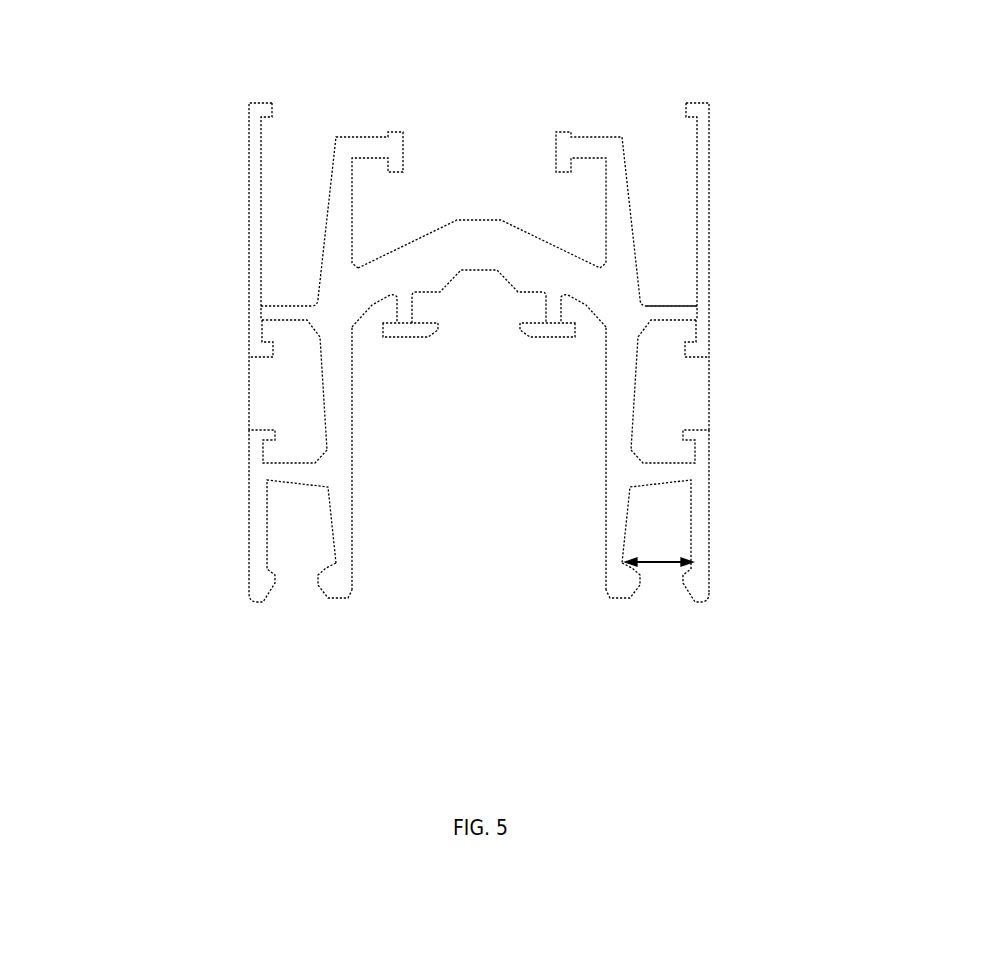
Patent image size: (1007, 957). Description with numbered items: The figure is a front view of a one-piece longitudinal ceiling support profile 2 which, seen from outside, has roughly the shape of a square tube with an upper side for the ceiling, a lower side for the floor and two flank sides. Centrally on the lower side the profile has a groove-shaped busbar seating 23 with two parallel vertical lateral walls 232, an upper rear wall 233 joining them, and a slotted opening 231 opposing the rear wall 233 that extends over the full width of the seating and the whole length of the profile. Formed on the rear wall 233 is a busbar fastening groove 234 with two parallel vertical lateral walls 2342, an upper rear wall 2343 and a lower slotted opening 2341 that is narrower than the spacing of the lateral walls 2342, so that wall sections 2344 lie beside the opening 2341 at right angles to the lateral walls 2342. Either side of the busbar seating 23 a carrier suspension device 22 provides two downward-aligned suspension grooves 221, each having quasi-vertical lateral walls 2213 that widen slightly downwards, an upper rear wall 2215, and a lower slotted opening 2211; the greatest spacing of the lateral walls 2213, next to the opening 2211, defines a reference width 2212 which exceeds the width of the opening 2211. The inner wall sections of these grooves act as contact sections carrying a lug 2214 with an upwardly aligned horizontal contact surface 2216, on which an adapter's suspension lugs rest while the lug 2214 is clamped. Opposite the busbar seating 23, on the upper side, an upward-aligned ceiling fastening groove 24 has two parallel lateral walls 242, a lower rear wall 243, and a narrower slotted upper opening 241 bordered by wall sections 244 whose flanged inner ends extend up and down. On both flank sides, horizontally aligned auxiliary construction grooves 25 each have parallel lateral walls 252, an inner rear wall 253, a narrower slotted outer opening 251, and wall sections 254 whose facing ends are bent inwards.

The ceiling support profile 2 is at (191, 131).
The carrier suspension device 22 is at (648, 613).
The suspension groove 221 is at (299, 578).
The lower opening 2211 is at (668, 587).
The reference width 2212 is at (697, 562).
The lateral wall 2213 is at (337, 508).
The lug 2214 is at (620, 575).
The upper rear wall 2215 is at (287, 468).
The contact surface 2216 is at (321, 568).
The busbar seating 23 is at (470, 557).
The opening 231 is at (542, 577).
The lateral wall 232 is at (347, 477).
The upper rear wall 233 is at (470, 260).
The busbar fastening groove 234 is at (545, 312).
The lower slotted opening 2341 is at (483, 340).
The lateral wall 2342 is at (405, 313).
The upper rear wall 2343 is at (479, 244).
The wall section 2344 is at (425, 333).
The ceiling fastening groove 24 is at (531, 182).
The upper opening 241 is at (480, 155).
The lateral wall 242 is at (343, 232).
The lower rear wall 243 is at (479, 244).
The wall section 244 is at (592, 146).
The auxiliary construction groove 25 is at (246, 403).
The outer opening 251 is at (705, 383).
The lateral wall 252 is at (677, 312).
The inner rear wall 253 is at (623, 413).
The wall section 254 is at (707, 453).